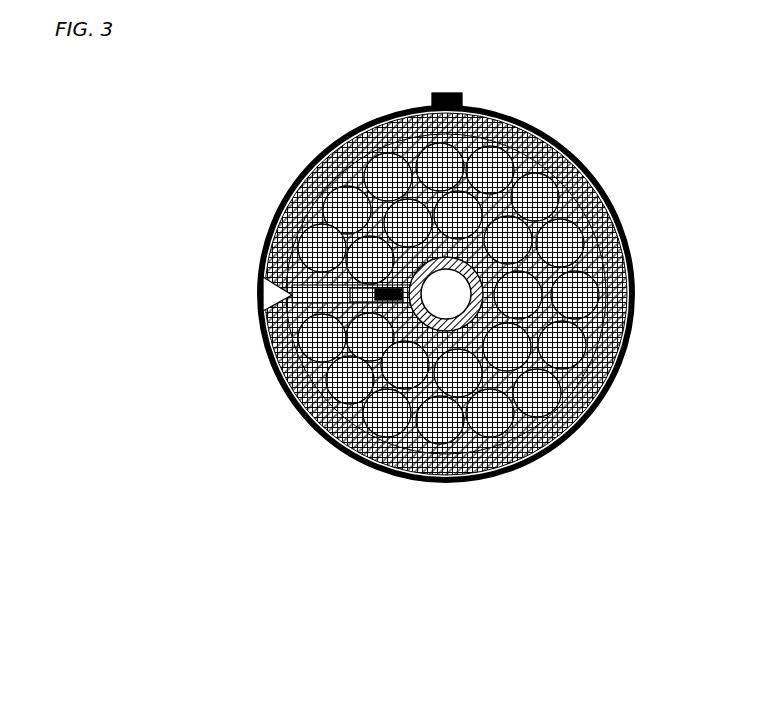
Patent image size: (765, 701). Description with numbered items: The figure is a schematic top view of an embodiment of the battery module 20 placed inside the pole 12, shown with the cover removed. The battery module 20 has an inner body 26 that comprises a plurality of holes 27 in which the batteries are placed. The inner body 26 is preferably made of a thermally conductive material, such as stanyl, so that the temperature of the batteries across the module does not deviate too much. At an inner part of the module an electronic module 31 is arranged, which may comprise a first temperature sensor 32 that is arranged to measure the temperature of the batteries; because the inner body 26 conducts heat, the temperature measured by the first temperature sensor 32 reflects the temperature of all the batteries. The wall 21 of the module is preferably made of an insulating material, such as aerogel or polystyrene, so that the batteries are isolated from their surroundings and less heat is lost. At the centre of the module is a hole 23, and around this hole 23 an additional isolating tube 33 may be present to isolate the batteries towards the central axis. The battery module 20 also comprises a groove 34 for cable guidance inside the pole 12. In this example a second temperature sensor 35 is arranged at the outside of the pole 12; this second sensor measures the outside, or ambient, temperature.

The pole 12 is at (336, 444).
The battery module 20 is at (432, 323).
The wall 21 is at (590, 379).
The hole 23 is at (549, 350).
The inner body 26 is at (583, 329).
The holes 27 is at (563, 244).
The electronic module 31 is at (362, 297).
The first temperature sensor 32 is at (388, 303).
The isolating tube 33 is at (555, 389).
The groove 34 is at (274, 290).
The second temperature sensor 35 is at (432, 97).